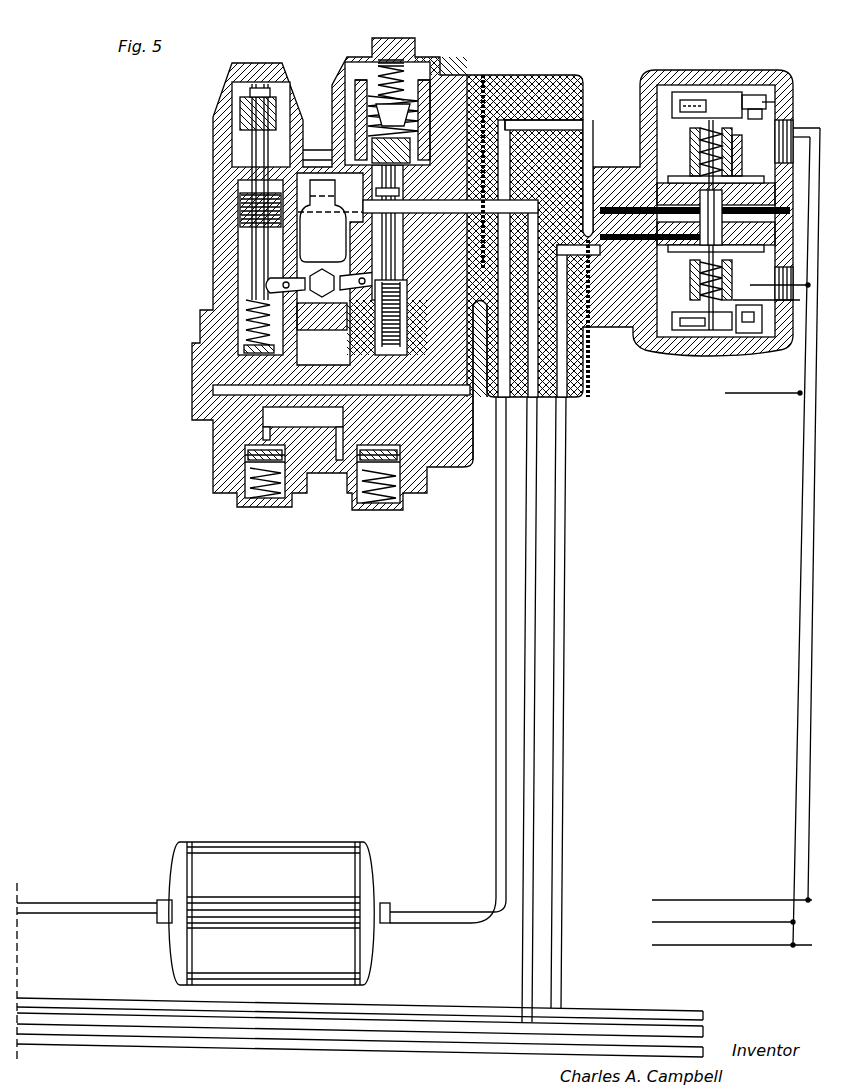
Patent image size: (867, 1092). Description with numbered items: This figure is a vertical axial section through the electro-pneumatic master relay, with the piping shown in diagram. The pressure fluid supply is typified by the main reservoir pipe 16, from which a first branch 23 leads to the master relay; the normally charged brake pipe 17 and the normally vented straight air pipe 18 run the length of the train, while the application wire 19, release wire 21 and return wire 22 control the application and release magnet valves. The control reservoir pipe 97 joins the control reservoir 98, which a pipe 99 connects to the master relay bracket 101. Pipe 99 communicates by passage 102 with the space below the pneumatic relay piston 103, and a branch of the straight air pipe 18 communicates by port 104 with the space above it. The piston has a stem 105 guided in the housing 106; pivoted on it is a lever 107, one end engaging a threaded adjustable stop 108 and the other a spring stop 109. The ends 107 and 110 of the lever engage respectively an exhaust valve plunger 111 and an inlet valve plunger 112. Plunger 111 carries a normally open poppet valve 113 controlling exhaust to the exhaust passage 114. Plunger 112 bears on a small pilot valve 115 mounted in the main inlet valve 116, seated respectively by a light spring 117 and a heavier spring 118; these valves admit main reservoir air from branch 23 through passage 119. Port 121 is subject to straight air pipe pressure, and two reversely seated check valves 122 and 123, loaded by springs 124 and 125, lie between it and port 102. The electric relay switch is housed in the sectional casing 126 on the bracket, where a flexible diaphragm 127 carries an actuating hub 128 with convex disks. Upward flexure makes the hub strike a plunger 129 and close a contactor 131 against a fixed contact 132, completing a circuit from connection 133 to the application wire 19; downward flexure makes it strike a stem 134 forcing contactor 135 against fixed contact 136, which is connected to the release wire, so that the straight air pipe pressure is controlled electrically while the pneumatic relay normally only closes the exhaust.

The main reservoir pipe 16 is at (58, 1003).
The brake pipe 17 is at (121, 1022).
The straight air pipe 18 is at (88, 1042).
The application wire 19 is at (664, 922).
The release wire 21 is at (664, 945).
The return wire 22 is at (664, 898).
The first branch 23 is at (560, 660).
The control reservoir pipe 97 is at (88, 906).
The control reservoir 98 is at (253, 858).
The pipe 99 is at (496, 705).
The master relay bracket 101 is at (524, 78).
The passage 102 is at (447, 455).
The pneumatic relay piston 103 is at (222, 360).
The port 104 is at (538, 372).
The stem 105 is at (317, 247).
The housing 106 is at (238, 223).
The lever 107 is at (323, 283).
The threaded adjustable stop 108 is at (387, 273).
The spring stop 109 is at (243, 298).
The lever end 110 is at (382, 293).
The exhaust valve plunger 111 is at (250, 265).
The inlet valve plunger 112 is at (383, 253).
The poppet valve 113 is at (238, 180).
The exhaust passage 114 is at (330, 150).
The pilot valve 115 is at (345, 108).
The main inlet valve 116 is at (417, 97).
The spring 117 is at (400, 70).
The spring 118 is at (345, 90).
The passage 119 is at (557, 153).
The port 121 is at (320, 427).
The check valve 122 is at (260, 477).
The check valve 123 is at (374, 487).
The spring 124 is at (268, 494).
The spring 125 is at (385, 494).
The casing 126 is at (641, 105).
The flexible diaphragm 127 is at (637, 170).
The actuating hub 128 is at (682, 183).
The plunger 129 is at (738, 148).
The contactor 131 is at (738, 103).
The fixed contact 132 is at (766, 100).
The connection 133 is at (745, 394).
The stem 134 is at (700, 280).
The contactor 135 is at (753, 327).
The fixed contact 136 is at (743, 330).